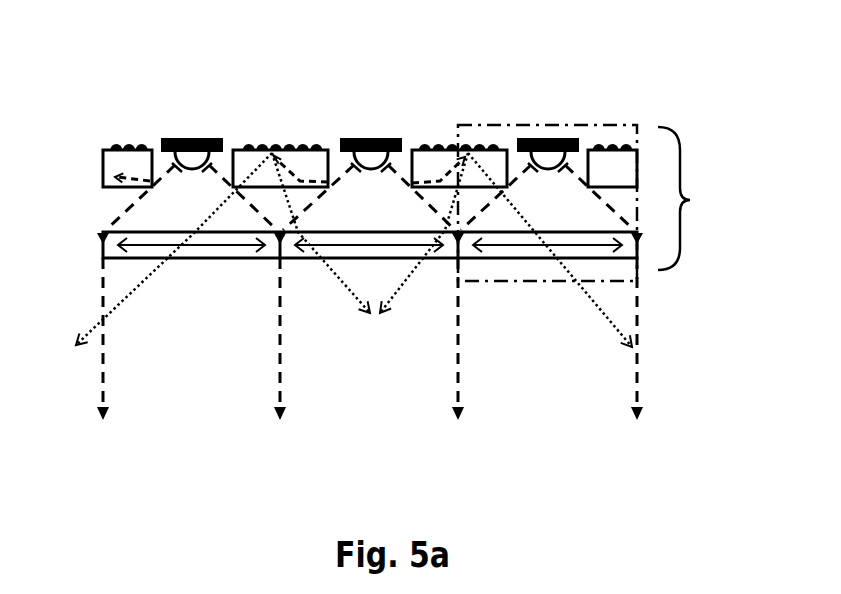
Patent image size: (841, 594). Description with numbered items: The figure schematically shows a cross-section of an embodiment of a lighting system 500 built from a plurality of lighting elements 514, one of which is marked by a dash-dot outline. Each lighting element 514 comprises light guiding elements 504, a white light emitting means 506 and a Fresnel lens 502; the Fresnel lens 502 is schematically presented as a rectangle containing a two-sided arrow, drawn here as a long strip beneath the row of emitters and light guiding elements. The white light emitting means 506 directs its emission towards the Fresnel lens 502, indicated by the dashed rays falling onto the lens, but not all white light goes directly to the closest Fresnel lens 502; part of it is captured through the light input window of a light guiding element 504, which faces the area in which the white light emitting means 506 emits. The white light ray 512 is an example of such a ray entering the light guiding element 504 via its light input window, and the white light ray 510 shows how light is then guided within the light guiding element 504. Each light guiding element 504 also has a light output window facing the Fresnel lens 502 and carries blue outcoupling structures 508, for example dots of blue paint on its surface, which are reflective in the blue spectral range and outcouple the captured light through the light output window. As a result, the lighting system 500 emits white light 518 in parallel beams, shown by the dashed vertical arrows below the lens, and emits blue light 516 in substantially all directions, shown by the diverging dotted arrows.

The lighting system 500 is at (702, 198).
The Fresnel lens 502 is at (163, 242).
The light guiding element 504 is at (148, 150).
The white light emitting means 506 is at (207, 138).
The blue outcoupling structures 508 is at (260, 150).
The white light ray 510 is at (298, 175).
The white light ray 512 is at (408, 150).
The lighting element 514 is at (488, 125).
The blue light 516 is at (152, 280).
The white light 518 is at (282, 375).